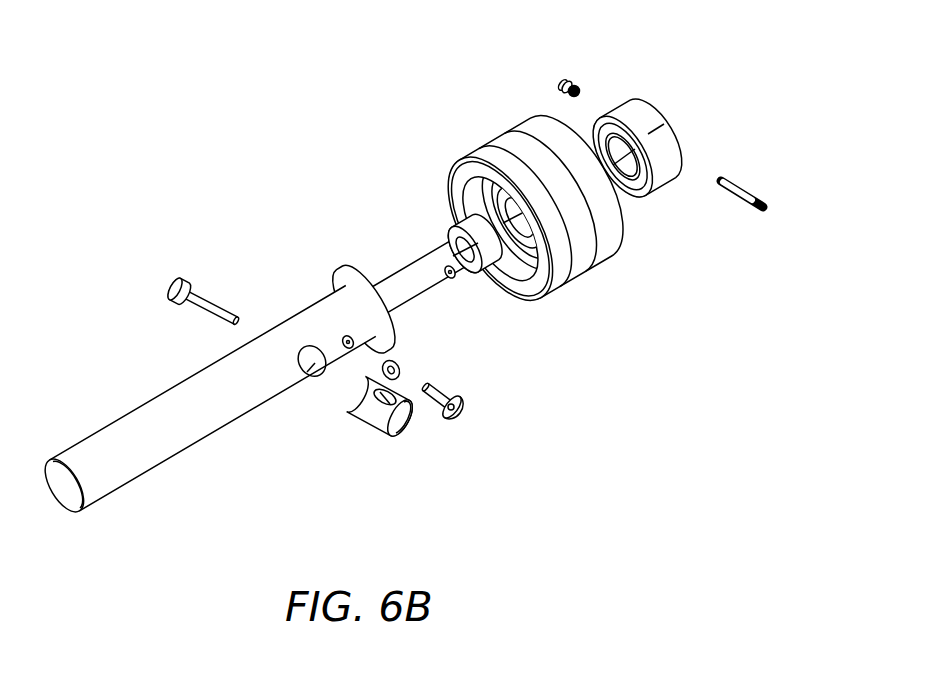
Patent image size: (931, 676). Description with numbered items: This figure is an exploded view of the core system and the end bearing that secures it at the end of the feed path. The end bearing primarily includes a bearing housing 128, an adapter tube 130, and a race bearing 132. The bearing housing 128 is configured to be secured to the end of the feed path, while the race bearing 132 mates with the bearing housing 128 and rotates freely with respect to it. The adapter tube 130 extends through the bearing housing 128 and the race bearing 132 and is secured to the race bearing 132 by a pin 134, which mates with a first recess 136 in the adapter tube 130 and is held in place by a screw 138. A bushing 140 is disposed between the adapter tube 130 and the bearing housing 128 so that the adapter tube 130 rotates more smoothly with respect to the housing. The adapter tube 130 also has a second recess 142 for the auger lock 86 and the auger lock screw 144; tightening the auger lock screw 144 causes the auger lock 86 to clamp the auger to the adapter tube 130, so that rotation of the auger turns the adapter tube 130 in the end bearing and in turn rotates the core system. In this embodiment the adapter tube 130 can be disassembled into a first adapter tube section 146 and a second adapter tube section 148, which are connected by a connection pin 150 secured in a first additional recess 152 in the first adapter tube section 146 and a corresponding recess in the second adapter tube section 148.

The auger lock 86 is at (404, 418).
The bearing housing 128 is at (605, 253).
The adapter tube 130 is at (137, 463).
The race bearing 132 is at (665, 161).
The pin 134 is at (728, 194).
The first recess 136 is at (453, 279).
The screw 138 is at (580, 80).
The bushing 140 is at (478, 273).
The second recess 142 is at (312, 372).
The auger lock screw 144 is at (190, 307).
The first adapter tube section 146 is at (279, 321).
The second adapter tube section 148 is at (407, 264).
The connection pin 150 is at (454, 416).
The first additional recess 152 is at (387, 343).